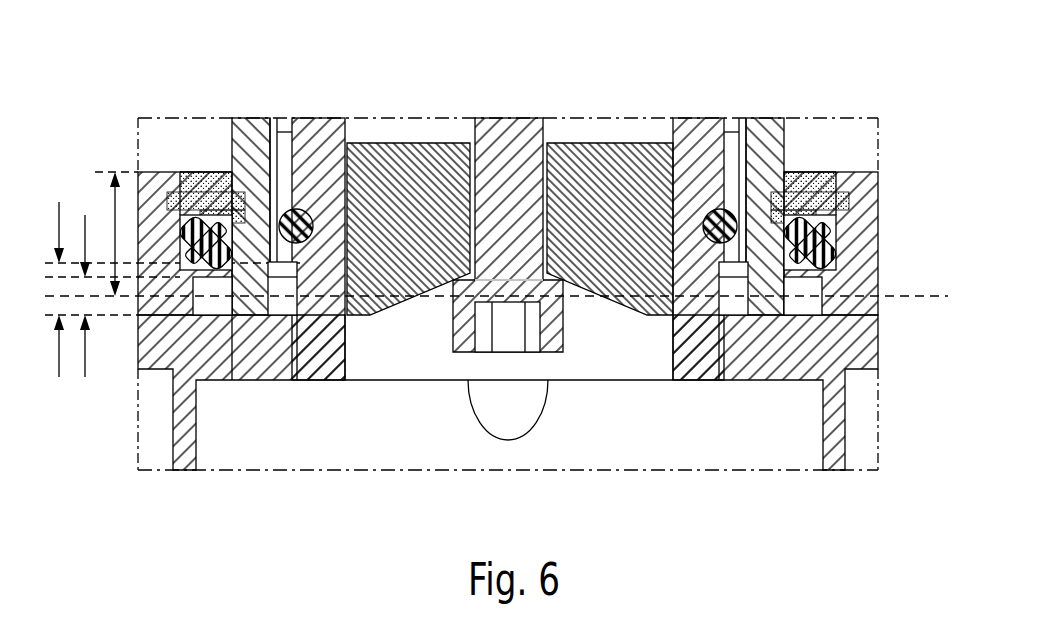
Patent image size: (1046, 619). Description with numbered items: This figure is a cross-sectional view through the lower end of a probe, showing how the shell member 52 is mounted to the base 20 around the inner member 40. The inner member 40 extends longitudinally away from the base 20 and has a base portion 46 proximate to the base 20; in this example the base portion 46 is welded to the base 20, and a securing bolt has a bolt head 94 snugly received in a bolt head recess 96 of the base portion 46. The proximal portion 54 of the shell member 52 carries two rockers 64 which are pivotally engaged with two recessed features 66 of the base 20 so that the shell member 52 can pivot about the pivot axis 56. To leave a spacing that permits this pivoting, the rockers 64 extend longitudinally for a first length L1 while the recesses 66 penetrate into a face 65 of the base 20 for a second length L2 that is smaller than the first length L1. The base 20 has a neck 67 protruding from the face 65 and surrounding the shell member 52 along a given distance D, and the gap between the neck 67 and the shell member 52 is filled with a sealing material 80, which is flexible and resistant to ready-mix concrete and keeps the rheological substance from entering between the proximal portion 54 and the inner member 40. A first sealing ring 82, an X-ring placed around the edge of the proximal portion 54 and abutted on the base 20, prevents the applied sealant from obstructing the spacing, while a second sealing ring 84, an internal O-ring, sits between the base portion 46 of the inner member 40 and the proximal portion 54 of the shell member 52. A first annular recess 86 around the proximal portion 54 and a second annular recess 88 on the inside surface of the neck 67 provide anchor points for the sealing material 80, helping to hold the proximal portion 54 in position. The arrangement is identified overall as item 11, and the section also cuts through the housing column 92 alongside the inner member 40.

The sealing arrangement 11 is at (505, 278).
The base 20 is at (845, 331).
The inner member 40 is at (317, 150).
The base portion 46 is at (628, 272).
The shell member 52 is at (769, 126).
The proximal portion 54 is at (825, 167).
The pivot axis 56 is at (898, 295).
The rockers 64 is at (213, 288).
The face 65 is at (840, 258).
The recessed features 66 is at (250, 300).
The neck 67 is at (150, 178).
The sealing material 80 is at (187, 196).
The first sealing ring 82 is at (225, 312).
The second sealing ring 84 is at (300, 240).
The first annular recess 86 is at (208, 186).
The second annular recess 88 is at (180, 178).
The housing column 92 is at (688, 196).
The bolt head 94 is at (458, 338).
The bolt head recess 96 is at (458, 272).
The given distance D is at (87, 234).
The first length L1 is at (60, 357).
The second length L2 is at (85, 355).